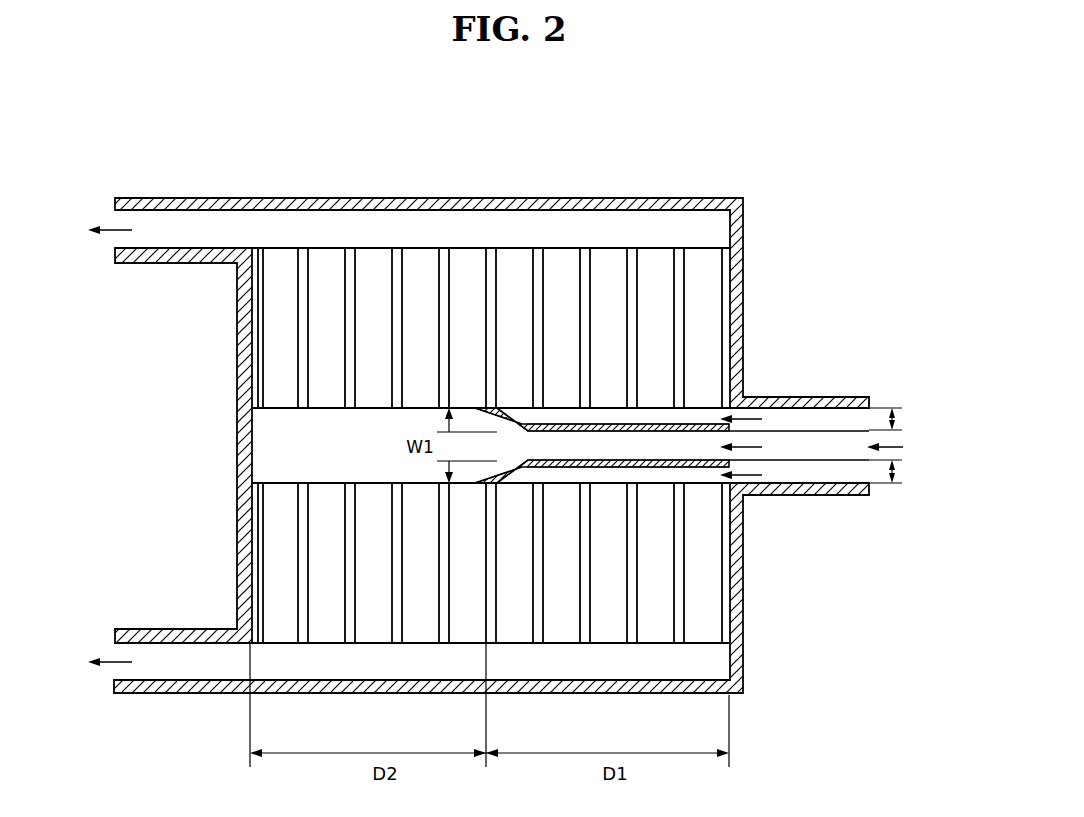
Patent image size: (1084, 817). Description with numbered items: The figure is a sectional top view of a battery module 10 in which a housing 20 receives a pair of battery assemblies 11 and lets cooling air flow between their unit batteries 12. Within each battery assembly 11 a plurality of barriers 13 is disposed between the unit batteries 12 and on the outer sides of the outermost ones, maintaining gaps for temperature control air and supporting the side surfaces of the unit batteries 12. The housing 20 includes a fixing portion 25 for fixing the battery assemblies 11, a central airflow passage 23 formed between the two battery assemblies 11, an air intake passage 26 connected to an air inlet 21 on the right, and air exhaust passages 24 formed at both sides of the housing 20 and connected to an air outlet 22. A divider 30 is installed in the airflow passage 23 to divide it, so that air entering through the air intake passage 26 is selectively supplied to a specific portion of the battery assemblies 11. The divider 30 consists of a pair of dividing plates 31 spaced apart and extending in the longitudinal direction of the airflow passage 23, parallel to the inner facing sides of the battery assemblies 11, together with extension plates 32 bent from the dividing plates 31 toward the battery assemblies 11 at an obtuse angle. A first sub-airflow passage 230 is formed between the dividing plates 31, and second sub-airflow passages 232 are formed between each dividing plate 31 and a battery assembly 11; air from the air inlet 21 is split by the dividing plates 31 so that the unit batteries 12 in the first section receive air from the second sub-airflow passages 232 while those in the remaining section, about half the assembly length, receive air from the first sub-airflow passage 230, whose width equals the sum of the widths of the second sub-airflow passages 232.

The battery module 10 is at (822, 230).
The battery assembly 11 is at (295, 160).
The unit battery 12 is at (369, 250).
The barrier 13 is at (303, 250).
The housing 20 is at (452, 206).
The air inlet 21 is at (870, 470).
The air outlet 22 is at (114, 240).
The airflow passage 23 is at (283, 453).
The air exhaust passage 24 is at (512, 230).
The fixing portion 25 is at (247, 322).
The air intake passage 26 is at (822, 472).
The divider 30 is at (644, 358).
The dividing plate 31 is at (573, 462).
The extension plate 32 is at (510, 483).
The first sub-airflow passage 230 is at (635, 447).
The second sub-airflow passage 232 is at (703, 420).